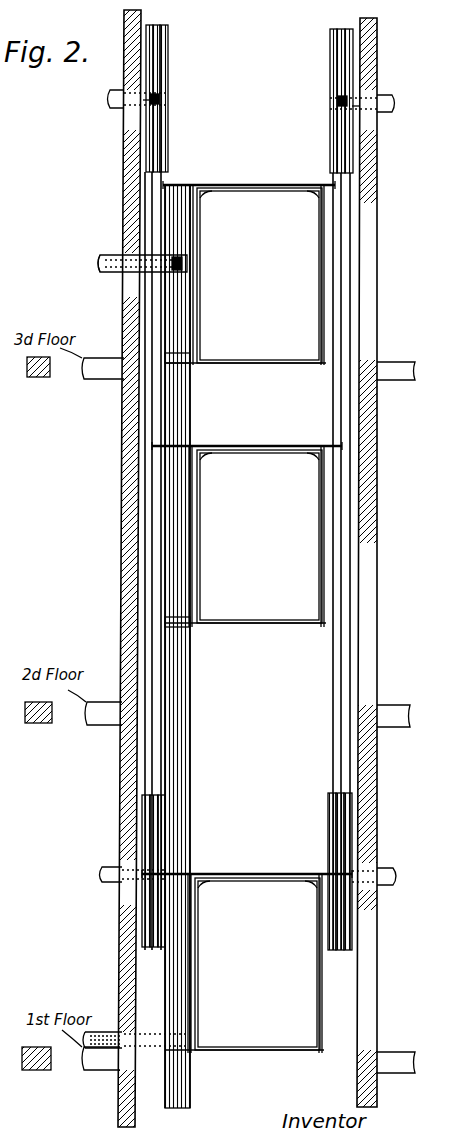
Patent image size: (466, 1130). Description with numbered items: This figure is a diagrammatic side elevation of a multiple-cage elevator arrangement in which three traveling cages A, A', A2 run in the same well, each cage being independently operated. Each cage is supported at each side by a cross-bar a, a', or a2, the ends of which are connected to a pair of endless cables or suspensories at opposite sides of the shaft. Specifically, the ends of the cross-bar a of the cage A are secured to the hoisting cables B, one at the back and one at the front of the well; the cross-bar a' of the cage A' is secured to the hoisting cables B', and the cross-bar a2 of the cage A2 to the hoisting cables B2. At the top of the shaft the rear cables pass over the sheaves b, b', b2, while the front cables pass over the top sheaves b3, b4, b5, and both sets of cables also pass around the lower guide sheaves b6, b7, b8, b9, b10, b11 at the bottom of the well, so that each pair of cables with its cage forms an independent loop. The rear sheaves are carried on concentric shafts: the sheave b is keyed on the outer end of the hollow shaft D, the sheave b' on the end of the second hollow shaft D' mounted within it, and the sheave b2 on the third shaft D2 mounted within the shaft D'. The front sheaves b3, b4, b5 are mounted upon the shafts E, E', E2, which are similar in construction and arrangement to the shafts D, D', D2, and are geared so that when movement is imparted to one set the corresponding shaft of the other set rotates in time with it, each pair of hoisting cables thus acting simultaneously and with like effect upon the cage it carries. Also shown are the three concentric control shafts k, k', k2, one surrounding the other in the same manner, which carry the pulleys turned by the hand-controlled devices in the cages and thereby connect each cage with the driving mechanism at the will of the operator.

The sheave b is at (148, 86).
The sheave b' is at (163, 86).
The sheave b2 is at (166, 25).
The top sheave b3 is at (350, 30).
The top sheave b4 is at (341, 30).
The top sheave b5 is at (333, 30).
The lower guide sheave b6 is at (143, 903).
The lower guide sheave b7 is at (150, 938).
The lower guide sheave b8 is at (160, 946).
The lower guide sheave b9 is at (352, 915).
The lower guide sheave b10 is at (345, 937).
The lower guide sheave b11 is at (335, 950).
The hoisting cable B is at (242, 561).
The hoisting cable B' is at (243, 561).
The hoisting cable B2 is at (161, 548).
The hollow shaft D is at (152, 84).
The second hollow shaft D' is at (174, 119).
The third shaft D2 is at (158, 98).
The shaft E is at (348, 108).
The shaft E' is at (326, 85).
The shaft E2 is at (362, 110).
The concentric shaft k is at (142, 251).
The concentric shaft k' is at (85, 251).
The concentric shaft k2 is at (104, 270).
The cross-bar a is at (247, 862).
The cross-bar a' is at (247, 432).
The cross-bar a2 is at (182, 186).
The traveling cage A is at (244, 963).
The traveling cage A' is at (245, 536).
The traveling cage A2 is at (245, 275).